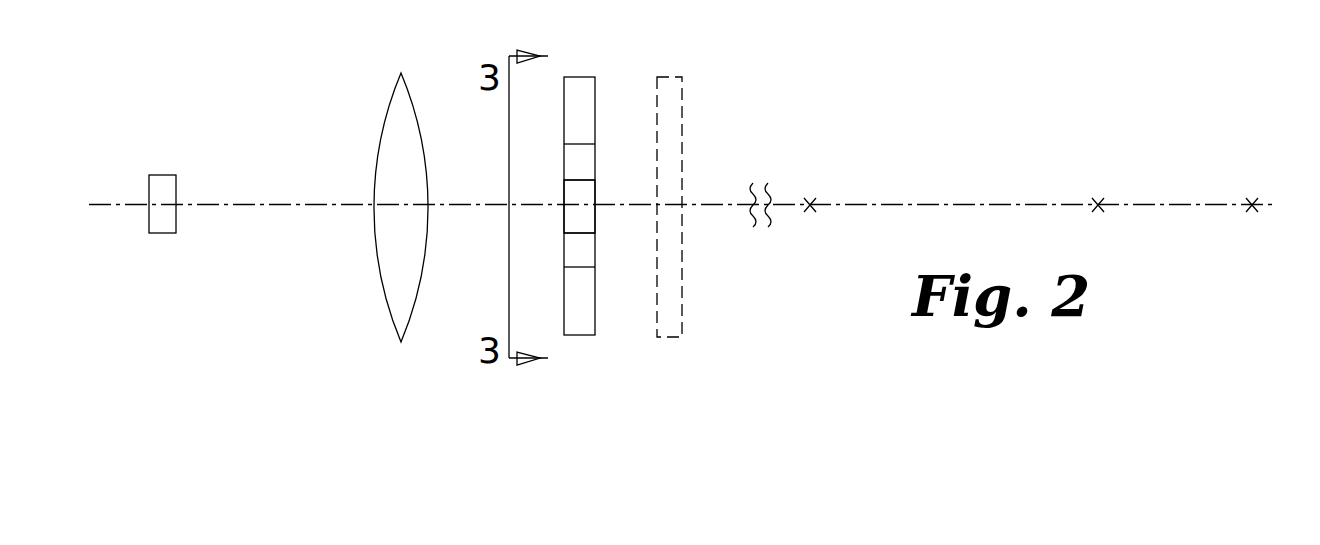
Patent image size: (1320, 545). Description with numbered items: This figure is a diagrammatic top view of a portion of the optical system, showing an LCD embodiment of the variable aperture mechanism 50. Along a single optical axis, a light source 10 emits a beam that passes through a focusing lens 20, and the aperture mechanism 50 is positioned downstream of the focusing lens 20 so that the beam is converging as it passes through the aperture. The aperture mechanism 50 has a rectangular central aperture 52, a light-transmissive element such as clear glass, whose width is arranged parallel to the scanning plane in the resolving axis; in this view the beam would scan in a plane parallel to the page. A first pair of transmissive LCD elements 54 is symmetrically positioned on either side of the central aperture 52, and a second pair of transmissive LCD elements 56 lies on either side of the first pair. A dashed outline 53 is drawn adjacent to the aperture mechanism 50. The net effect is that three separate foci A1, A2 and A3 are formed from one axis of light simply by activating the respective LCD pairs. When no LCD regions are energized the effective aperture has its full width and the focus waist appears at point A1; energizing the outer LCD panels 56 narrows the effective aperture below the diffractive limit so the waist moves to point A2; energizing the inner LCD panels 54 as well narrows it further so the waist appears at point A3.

The light source 10 is at (164, 189).
The focusing lens 20 is at (401, 73).
The aperture mechanism 50 is at (582, 77).
The central aperture 52 is at (587, 197).
The second plate (alternate position) 53 is at (672, 75).
The first pair of transmissive LCD elements 54 is at (583, 165).
The second pair of transmissive LCD elements 56 is at (587, 105).
The focus point A1 is at (1255, 195).
The focus point A2 is at (1110, 195).
The focus point A3 is at (820, 195).